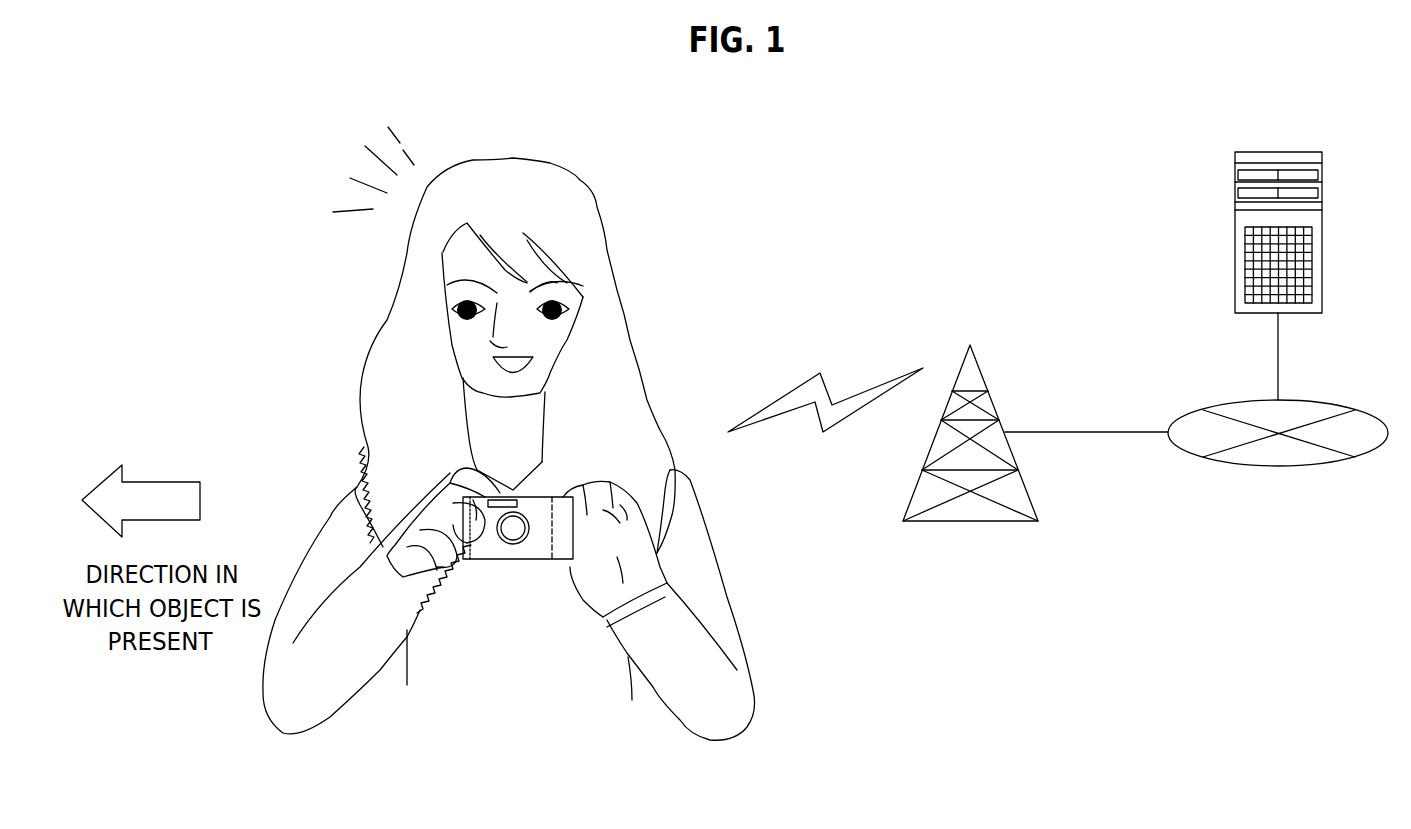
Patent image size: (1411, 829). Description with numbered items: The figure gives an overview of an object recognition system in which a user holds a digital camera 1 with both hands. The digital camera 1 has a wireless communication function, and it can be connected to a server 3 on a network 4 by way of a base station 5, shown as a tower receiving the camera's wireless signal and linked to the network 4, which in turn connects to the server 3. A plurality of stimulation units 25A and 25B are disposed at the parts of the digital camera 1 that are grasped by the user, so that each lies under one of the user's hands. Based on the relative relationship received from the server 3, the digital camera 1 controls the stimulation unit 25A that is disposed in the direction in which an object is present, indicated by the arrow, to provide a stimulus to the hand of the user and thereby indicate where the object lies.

The digital camera 1 is at (527, 563).
The stimulation unit 25A is at (473, 563).
The stimulation unit 25B is at (560, 563).
The server 3 is at (1278, 152).
The network 4 is at (1313, 400).
The base station 5 is at (973, 525).